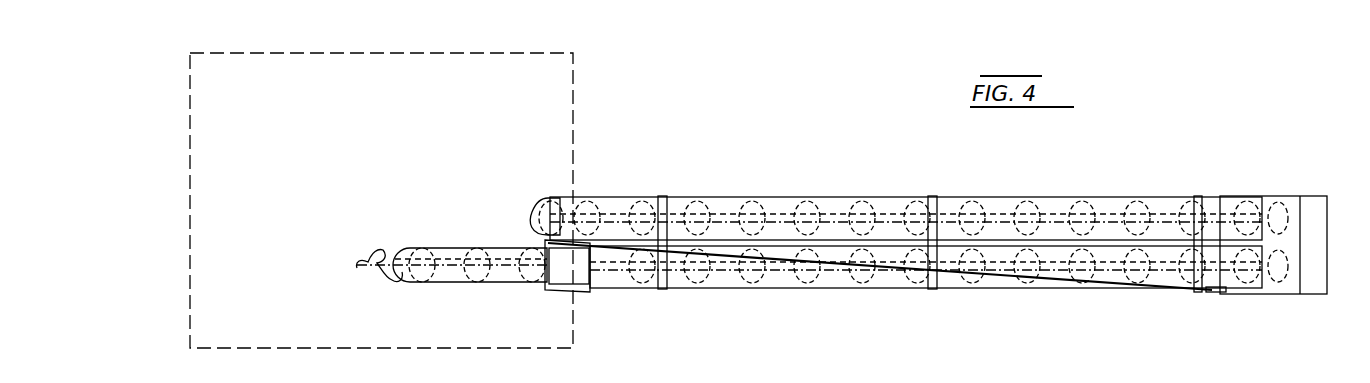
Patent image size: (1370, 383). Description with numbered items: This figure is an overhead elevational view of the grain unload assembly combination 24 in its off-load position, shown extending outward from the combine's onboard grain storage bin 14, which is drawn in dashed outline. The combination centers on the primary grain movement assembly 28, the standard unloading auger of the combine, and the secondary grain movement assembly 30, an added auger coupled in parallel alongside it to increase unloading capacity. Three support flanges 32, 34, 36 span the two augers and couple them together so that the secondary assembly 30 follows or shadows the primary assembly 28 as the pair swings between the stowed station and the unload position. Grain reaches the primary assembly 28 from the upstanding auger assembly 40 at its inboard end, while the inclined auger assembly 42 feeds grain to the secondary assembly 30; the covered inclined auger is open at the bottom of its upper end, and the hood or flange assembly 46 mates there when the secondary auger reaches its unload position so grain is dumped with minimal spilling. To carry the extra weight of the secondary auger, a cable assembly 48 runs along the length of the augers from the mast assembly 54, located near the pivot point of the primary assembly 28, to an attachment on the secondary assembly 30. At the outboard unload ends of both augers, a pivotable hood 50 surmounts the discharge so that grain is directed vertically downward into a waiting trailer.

The onboard grain storage bin 14 is at (545, 53).
The grain unload assembly combination 24 is at (832, 140).
The primary grain movement assembly 28 is at (840, 197).
The secondary grain movement assembly 30 is at (970, 290).
The support flange 32 is at (664, 196).
The support flange 34 is at (933, 196).
The support flange 36 is at (1197, 196).
The upstanding auger assembly 40 is at (548, 198).
The inclined auger assembly 42 is at (475, 283).
The hood or flange assembly 46 is at (560, 292).
The cable assembly 48 is at (1085, 288).
The pivotable hood 50 is at (1313, 220).
The mast assembly 54 is at (1212, 292).